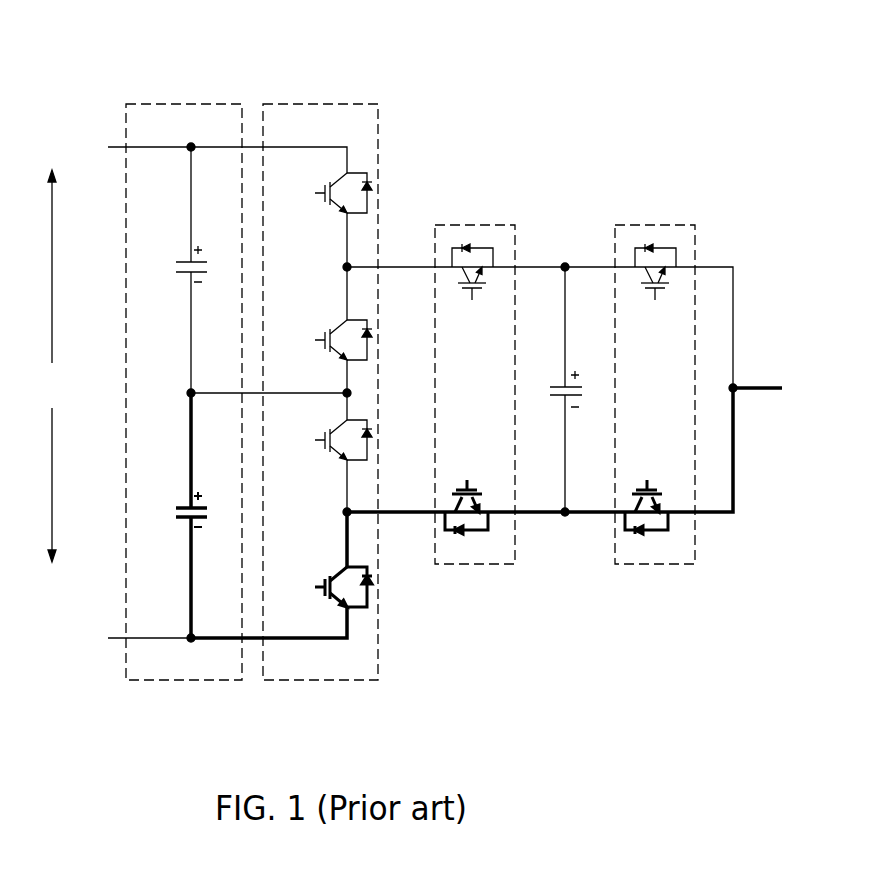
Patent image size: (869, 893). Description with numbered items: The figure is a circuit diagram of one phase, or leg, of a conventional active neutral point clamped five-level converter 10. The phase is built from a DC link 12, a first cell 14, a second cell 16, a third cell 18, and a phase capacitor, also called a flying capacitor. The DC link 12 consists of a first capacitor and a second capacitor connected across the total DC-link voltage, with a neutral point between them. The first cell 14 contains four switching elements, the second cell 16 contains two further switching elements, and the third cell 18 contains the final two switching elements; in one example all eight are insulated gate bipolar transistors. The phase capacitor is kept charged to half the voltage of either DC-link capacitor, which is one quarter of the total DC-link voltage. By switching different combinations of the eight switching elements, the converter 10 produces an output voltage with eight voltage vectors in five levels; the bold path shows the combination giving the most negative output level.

The active neutral point clamped five-level converter 10 is at (552, 56).
The DC link 12 is at (182, 680).
The first cell 14 is at (322, 680).
The second cell 16 is at (472, 564).
The third cell 18 is at (653, 564).